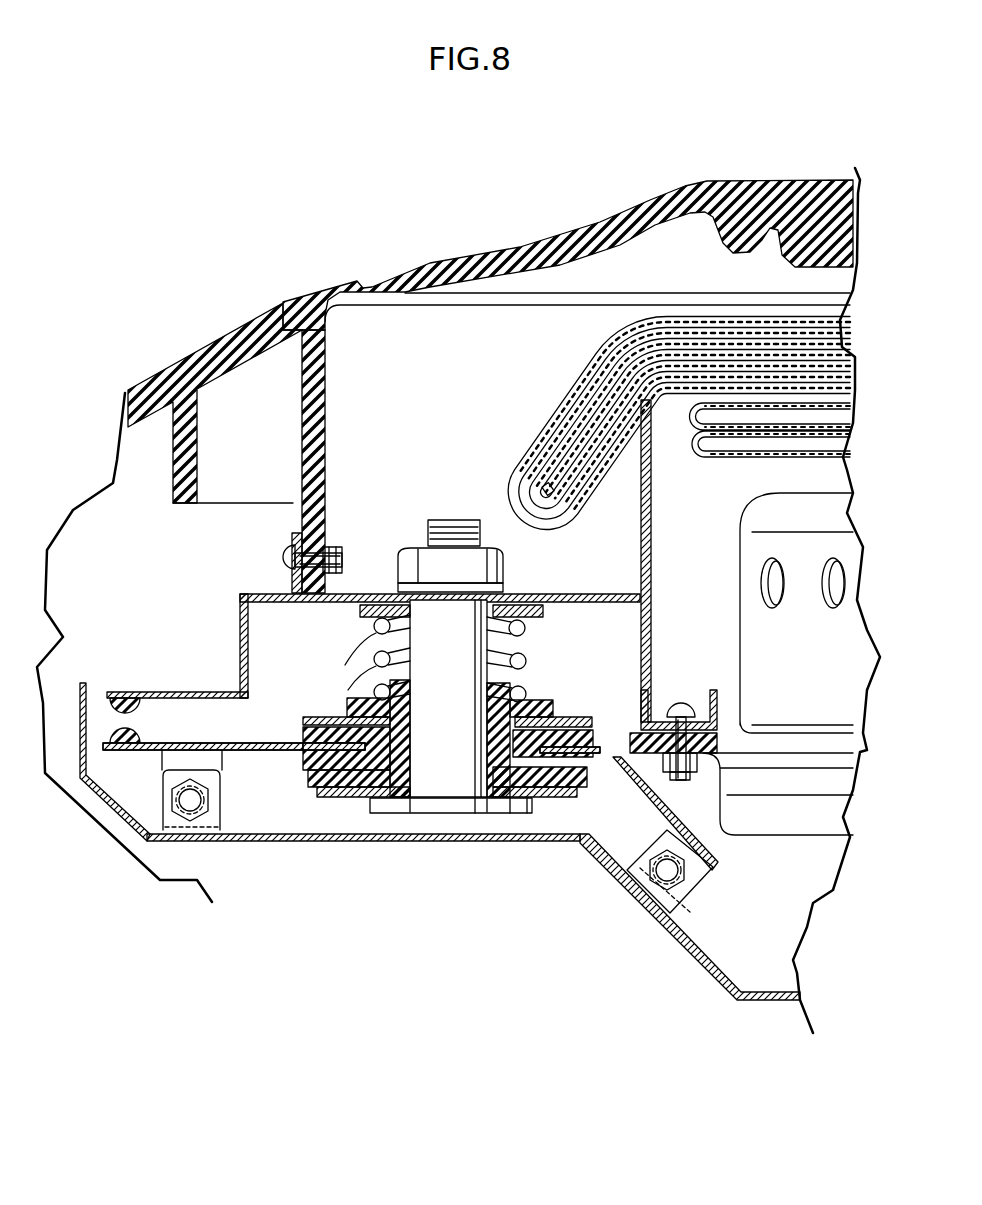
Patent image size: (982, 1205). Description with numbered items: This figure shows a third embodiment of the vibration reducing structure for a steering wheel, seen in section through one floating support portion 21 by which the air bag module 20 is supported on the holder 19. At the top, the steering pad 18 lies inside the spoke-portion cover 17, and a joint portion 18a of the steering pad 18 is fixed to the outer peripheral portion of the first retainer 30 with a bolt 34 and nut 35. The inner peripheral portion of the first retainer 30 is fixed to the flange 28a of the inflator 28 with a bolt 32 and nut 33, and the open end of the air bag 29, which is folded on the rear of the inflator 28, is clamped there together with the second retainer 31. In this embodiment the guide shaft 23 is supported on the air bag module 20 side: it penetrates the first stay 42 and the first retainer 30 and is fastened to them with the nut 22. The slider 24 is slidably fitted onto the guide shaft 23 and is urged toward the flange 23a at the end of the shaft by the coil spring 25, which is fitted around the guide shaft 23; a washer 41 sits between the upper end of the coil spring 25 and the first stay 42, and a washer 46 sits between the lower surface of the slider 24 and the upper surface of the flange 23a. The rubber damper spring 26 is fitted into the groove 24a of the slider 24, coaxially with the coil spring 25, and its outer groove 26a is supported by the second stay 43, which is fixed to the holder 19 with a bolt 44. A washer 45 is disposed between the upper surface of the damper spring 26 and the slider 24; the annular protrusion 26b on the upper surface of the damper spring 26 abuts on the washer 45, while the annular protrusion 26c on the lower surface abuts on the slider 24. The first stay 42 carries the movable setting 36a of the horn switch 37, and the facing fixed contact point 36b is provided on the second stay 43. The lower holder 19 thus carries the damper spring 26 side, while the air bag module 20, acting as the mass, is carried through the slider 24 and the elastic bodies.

The spoke-portion cover 17 is at (222, 345).
The steering pad 18 is at (541, 240).
The joint portion 18a is at (328, 437).
The holder 19 is at (683, 947).
The air bag module 20 is at (562, 340).
The floating support portion 21 is at (346, 810).
The nut 22 is at (490, 560).
The guide shaft 23 is at (430, 816).
The flange 23a is at (460, 807).
The slider 24 is at (548, 697).
The groove 24a is at (487, 727).
The coil spring 25 is at (368, 655).
The damper spring 26 is at (340, 725).
The groove 26a is at (298, 752).
The annular protrusion 26b is at (325, 713).
The annular protrusion 26c is at (332, 792).
The inflator 28 is at (738, 553).
The flange 28a is at (630, 783).
The air bag 29 is at (565, 393).
The first retainer 30 is at (538, 597).
The second retainer 31 is at (717, 690).
The bolt 32 is at (680, 703).
The nut 33 is at (700, 778).
The bolt 34 is at (290, 556).
The nut 35 is at (335, 552).
The movable setting 36a is at (140, 707).
The fixed contact point 36b is at (135, 735).
The horn switch 37 is at (112, 717).
The washer 41 is at (533, 618).
The first stay 42 is at (240, 640).
The second stay 43 is at (280, 743).
The bolt 44 is at (193, 808).
The washer 45 is at (573, 717).
The washer 46 is at (544, 797).